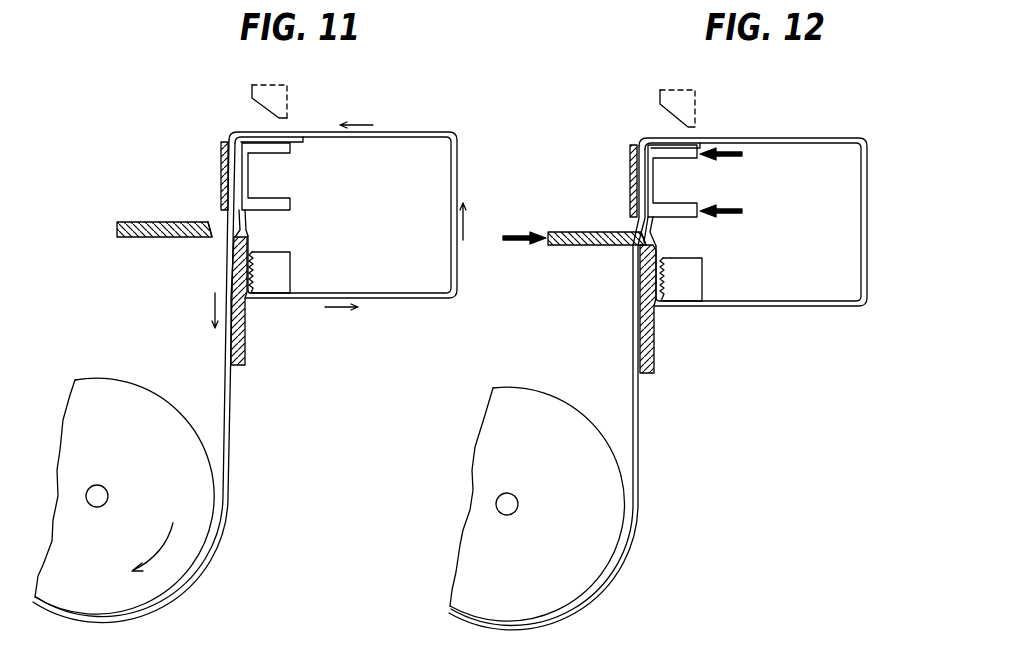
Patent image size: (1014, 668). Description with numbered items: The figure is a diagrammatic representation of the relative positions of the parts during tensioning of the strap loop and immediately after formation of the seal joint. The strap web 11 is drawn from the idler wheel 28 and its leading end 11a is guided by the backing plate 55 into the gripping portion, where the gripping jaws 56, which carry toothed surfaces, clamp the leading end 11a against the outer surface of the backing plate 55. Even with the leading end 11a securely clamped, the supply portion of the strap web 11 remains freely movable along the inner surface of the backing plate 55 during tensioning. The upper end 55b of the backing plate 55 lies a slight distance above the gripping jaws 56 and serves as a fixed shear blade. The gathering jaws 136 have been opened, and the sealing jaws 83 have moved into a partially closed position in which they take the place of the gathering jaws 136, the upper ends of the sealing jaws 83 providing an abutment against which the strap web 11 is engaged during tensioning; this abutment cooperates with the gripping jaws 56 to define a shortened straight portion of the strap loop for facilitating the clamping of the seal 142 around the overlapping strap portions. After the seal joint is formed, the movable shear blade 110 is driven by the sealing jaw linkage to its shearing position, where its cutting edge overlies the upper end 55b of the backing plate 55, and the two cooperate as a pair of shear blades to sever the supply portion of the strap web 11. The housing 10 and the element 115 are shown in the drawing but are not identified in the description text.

In FIG. 11, the cassette housing 10 is at (431, 132).
In FIG. 12, the cassette housing 10 is at (828, 138).
In FIG. 11, the strap web 11 is at (230, 418).
In FIG. 12, the strap web 11 is at (640, 438).
In FIG. 11, the leading end of the strap web 11a is at (304, 140).
In FIG. 12, the leading end of the strap web 11a is at (712, 146).
In FIG. 11, the idler wheel 28 is at (131, 391).
In FIG. 12, the idler wheel 28 is at (545, 409).
In FIG. 11, the backing plate 55 is at (240, 337).
In FIG. 12, the backing plate 55 is at (653, 353).
In FIG. 11, the upper end of the backing plate 55b is at (247, 227).
In FIG. 12, the upper end of the backing plate 55b is at (660, 245).
In FIG. 11, the gripping jaws 56 is at (282, 272).
In FIG. 12, the gripping jaws 56 is at (693, 279).
In FIG. 11, the sealing jaws 83 is at (268, 203).
In FIG. 12, the sealing jaws 83 is at (670, 207).
In FIG. 11, the movable shear blade 110 is at (136, 222).
In FIG. 12, the movable shear blade 110 is at (578, 232).
In FIG. 11, the tip of actuating bar 115 is at (210, 226).
In FIG. 12, the tip of actuating bar 115 is at (643, 240).
In FIG. 11, the gathering jaws 136 is at (291, 89).
In FIG. 12, the gathering jaws 136 is at (698, 95).
In FIG. 11, the seal 142 is at (221, 168).
In FIG. 12, the seal 142 is at (630, 165).